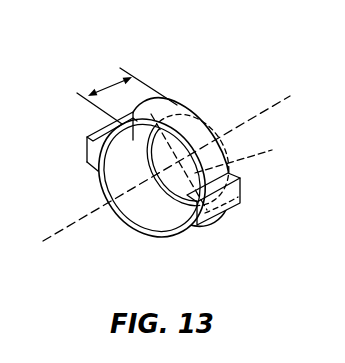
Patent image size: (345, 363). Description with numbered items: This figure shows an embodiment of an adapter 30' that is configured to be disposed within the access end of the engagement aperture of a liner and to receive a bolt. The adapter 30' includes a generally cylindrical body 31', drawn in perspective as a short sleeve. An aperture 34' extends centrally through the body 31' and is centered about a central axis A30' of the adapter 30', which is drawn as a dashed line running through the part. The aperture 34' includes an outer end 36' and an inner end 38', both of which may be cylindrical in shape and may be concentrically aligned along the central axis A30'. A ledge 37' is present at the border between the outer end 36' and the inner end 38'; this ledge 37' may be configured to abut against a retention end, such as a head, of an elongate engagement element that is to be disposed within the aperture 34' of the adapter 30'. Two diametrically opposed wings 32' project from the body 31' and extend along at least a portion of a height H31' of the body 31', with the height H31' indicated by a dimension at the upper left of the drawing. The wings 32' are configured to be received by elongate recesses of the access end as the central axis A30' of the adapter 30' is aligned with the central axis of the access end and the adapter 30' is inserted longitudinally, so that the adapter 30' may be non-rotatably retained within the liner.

The adapter 30' is at (158, 159).
The body 31' is at (178, 140).
The wings 32' is at (235, 216).
The aperture 34' is at (118, 178).
The outer end 36' is at (188, 190).
The ledge 37' is at (84, 138).
The inner end 38' is at (250, 157).
The central axis A30' is at (166, 187).
The height H31' is at (124, 70).